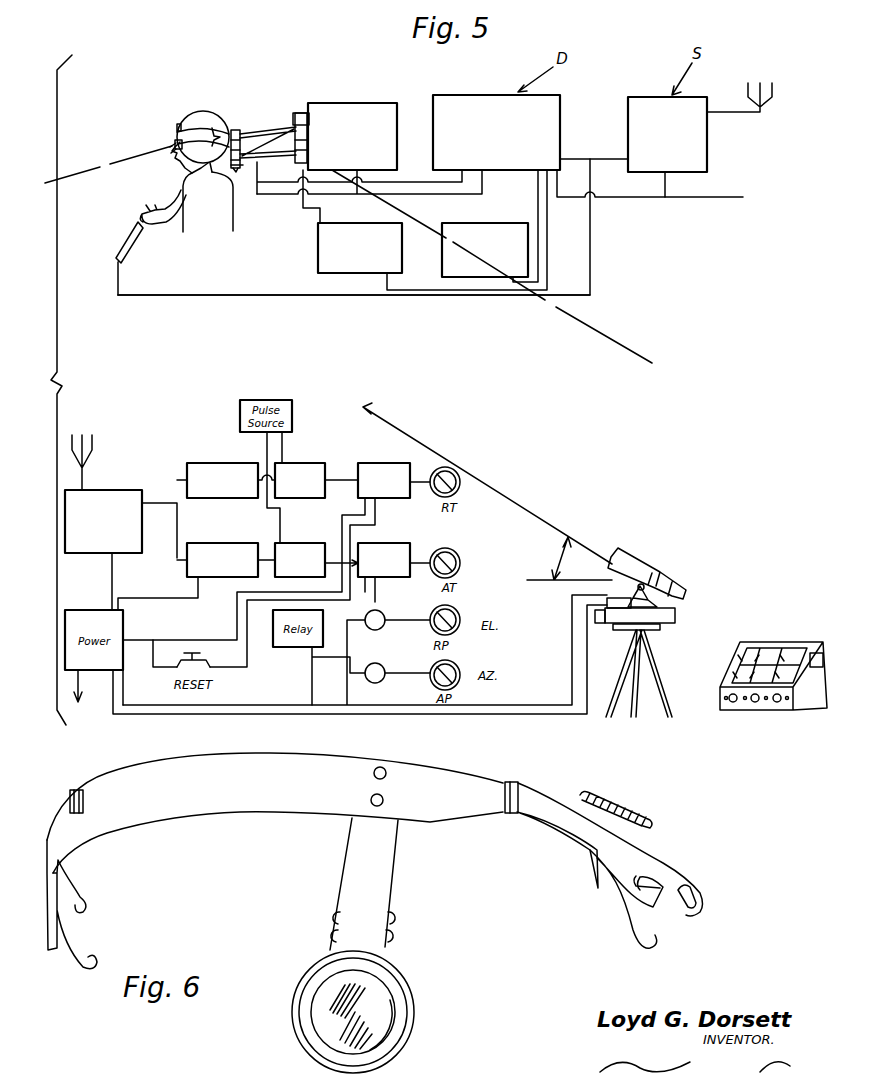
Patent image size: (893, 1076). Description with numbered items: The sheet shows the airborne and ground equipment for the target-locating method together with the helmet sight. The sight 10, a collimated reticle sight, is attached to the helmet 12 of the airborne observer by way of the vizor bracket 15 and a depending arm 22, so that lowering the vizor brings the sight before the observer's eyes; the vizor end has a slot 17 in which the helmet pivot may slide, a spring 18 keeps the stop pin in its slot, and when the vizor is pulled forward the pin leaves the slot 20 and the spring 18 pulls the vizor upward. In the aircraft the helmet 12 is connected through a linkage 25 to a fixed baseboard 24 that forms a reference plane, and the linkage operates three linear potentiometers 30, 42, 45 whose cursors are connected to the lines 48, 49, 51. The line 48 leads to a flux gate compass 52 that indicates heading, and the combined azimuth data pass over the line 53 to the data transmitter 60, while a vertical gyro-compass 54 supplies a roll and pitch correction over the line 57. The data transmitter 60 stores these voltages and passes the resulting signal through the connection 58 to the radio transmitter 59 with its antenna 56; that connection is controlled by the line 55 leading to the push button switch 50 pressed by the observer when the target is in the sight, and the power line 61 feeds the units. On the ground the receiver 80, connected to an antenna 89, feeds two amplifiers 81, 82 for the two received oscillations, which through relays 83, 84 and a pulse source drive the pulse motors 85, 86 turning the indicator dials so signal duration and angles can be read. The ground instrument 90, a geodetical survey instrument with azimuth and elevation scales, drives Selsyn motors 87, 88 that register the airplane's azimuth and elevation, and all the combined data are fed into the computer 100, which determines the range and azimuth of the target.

In FIG. 5, the sight 10 is at (175, 146).
In FIG. 6, the sight 10 is at (397, 1037).
In FIG. 5, the helmet 12 is at (200, 123).
In FIG. 6, the vizor bracket 15 is at (518, 838).
In FIG. 6, the slot 17 is at (699, 902).
In FIG. 6, the spring 18 is at (628, 806).
In FIG. 6, the slot 20 is at (652, 873).
In FIG. 6, the depending arm 22 is at (373, 875).
In FIG. 5, the baseboard 24 is at (313, 108).
In FIG. 5, the linkage 25 is at (267, 116).
In FIG. 5, the linear potentiometer 30 is at (306, 113).
In FIG. 5, the linear potentiometer 42 is at (236, 171).
In FIG. 5, the linear potentiometer 45 is at (236, 133).
In FIG. 5, the line 48 is at (306, 205).
In FIG. 5, the line 49 is at (415, 182).
In FIG. 5, the push button switch 50 is at (138, 227).
In FIG. 5, the line 51 is at (410, 195).
In FIG. 5, the flux gate compass 52 is at (318, 267).
In FIG. 5, the line 53 is at (547, 259).
In FIG. 5, the vertical gyro-compass 54 is at (442, 268).
In FIG. 5, the line 55 is at (374, 295).
In FIG. 5, the antenna 56 is at (772, 90).
In FIG. 5, the line 57 is at (538, 232).
In FIG. 5, the connection 58 is at (607, 157).
In FIG. 5, the radio transmitter 59 is at (703, 167).
In FIG. 5, the data transmitter 60 is at (500, 166).
In FIG. 5, the power line 61 is at (633, 200).
In FIG. 5, the receiver 80 is at (118, 500).
In FIG. 5, the amplifier 81 is at (237, 468).
In FIG. 5, the amplifier 82 is at (240, 548).
In FIG. 5, the relay 83 is at (312, 470).
In FIG. 5, the relay 84 is at (295, 548).
In FIG. 5, the pulse motor 85 is at (363, 463).
In FIG. 5, the pulse motor 86 is at (402, 545).
In FIG. 5, the Selsyn motor 87 is at (380, 614).
In FIG. 5, the Selsyn motor 88 is at (378, 678).
In FIG. 5, the antenna 89 is at (90, 443).
In FIG. 5, the ground instrument 90 is at (636, 568).
In FIG. 5, the computer 100 is at (783, 708).